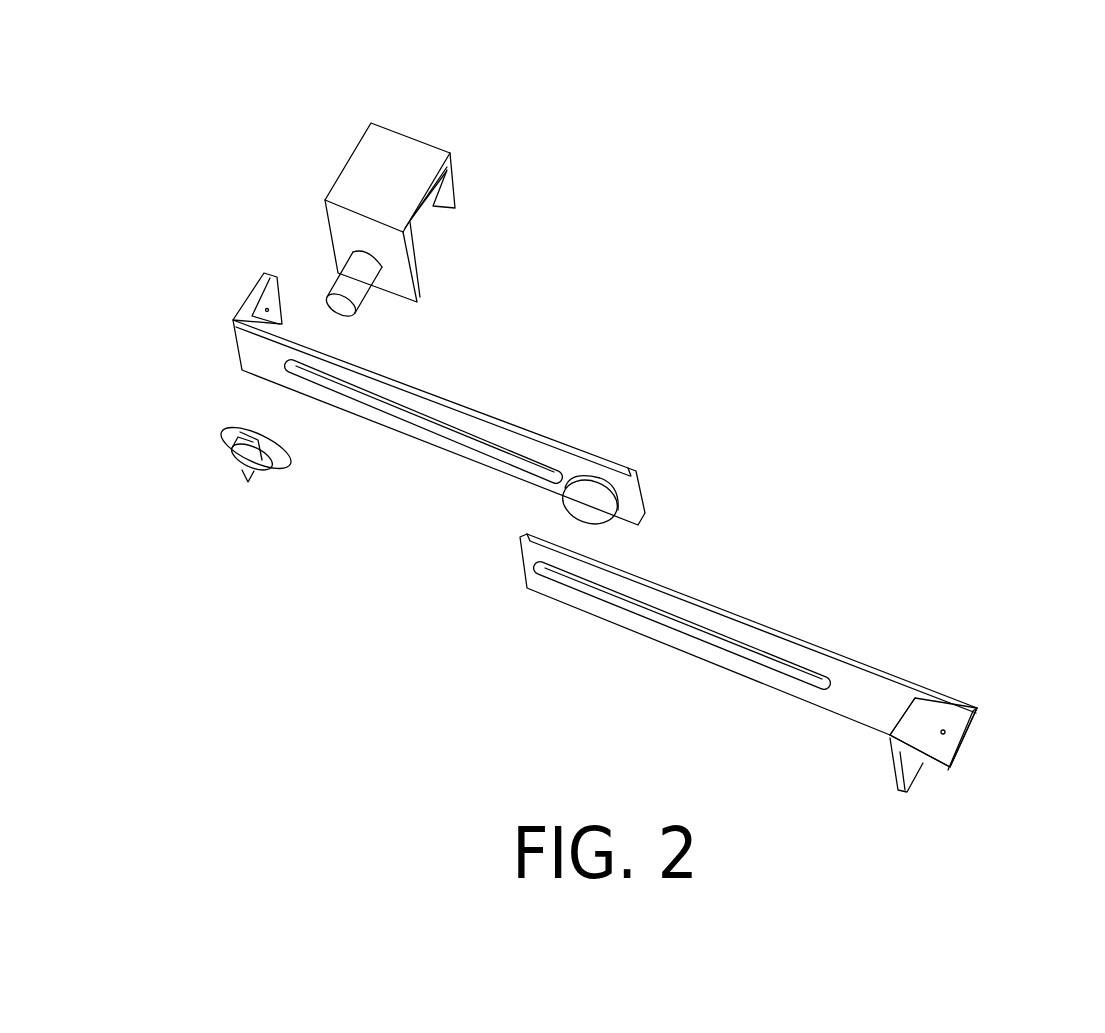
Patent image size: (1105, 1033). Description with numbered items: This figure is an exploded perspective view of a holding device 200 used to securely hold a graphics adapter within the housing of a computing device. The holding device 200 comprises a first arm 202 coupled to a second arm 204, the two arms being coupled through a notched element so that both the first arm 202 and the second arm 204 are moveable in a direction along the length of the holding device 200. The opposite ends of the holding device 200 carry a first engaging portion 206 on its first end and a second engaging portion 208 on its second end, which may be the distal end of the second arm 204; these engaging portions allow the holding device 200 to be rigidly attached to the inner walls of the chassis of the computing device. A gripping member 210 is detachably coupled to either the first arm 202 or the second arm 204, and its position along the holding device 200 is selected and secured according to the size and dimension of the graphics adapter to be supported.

The holding device 200 is at (950, 84).
The first arm 202 is at (785, 633).
The second arm 204 is at (512, 422).
The first engaging portion 206 is at (962, 743).
The second engaging portion 208 is at (247, 297).
The gripping member 210 is at (413, 138).